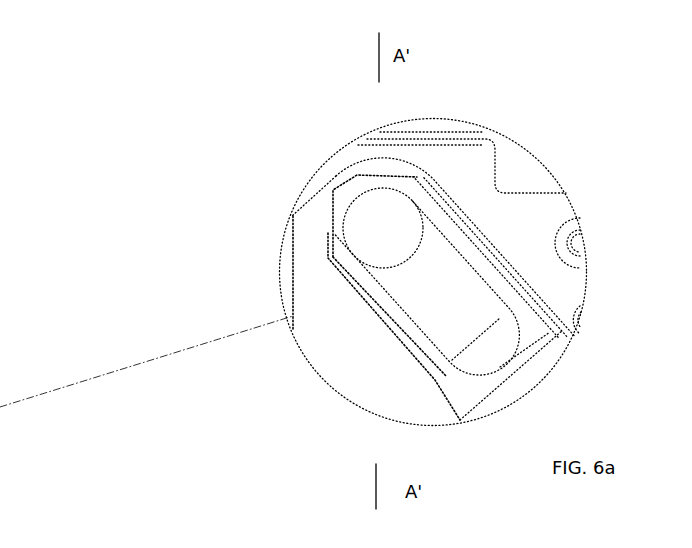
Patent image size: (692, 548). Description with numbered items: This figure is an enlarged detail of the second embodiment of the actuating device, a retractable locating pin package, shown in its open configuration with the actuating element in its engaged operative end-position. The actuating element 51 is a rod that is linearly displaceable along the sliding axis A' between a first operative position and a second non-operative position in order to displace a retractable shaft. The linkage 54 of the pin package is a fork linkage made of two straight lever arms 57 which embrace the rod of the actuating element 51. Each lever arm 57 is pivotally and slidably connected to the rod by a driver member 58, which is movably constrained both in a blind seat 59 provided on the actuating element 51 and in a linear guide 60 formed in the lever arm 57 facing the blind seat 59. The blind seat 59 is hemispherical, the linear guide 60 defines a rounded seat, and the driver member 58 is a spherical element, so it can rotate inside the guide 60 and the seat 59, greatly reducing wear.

The actuating element 51 is at (312, 284).
The linkage 54 is at (497, 245).
The lever arm 57 is at (455, 389).
The driver member 58 is at (374, 233).
The blind seat 59 is at (383, 180).
The linear guide 60 is at (430, 300).